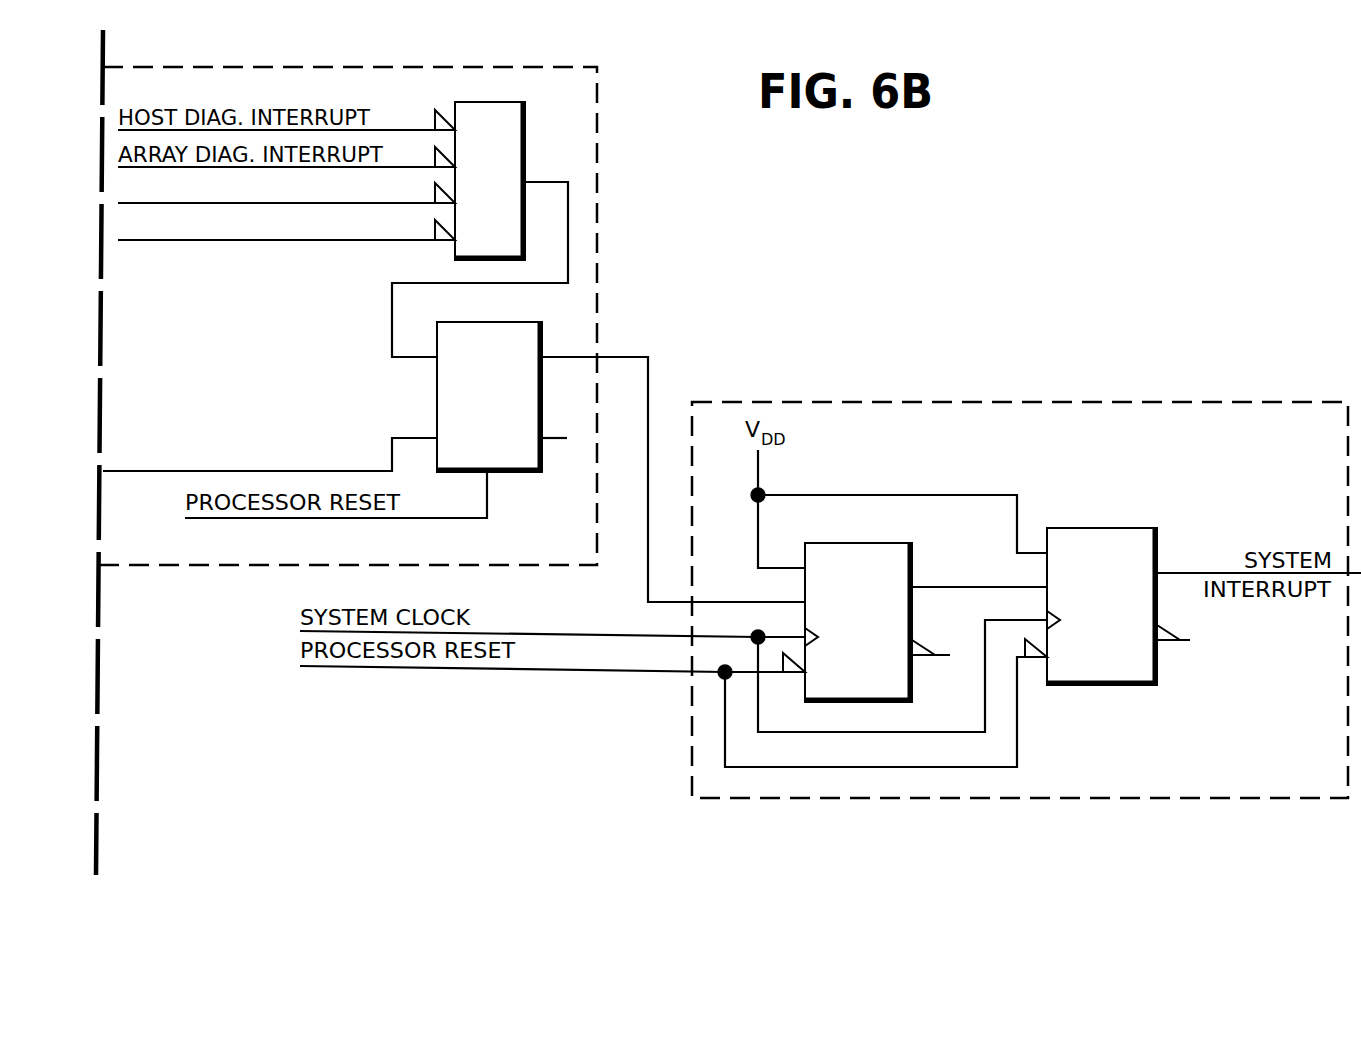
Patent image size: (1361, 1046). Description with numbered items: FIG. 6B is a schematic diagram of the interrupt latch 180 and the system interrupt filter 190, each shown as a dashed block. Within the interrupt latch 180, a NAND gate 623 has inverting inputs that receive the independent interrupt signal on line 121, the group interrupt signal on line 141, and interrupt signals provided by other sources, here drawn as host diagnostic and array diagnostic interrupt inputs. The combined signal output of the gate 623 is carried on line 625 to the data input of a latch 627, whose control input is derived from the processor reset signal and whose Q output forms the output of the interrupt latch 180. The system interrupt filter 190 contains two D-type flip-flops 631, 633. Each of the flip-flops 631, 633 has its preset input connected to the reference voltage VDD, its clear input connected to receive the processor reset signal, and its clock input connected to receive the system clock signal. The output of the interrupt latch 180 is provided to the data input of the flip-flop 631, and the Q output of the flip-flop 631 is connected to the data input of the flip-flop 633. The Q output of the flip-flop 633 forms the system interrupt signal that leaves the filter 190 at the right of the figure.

The interrupt latch 180 is at (597, 120).
The system interrupt filter 190 is at (905, 402).
The NAND gate 623 is at (525, 103).
The OR gate output line 625 is at (392, 320).
The latch 627 is at (540, 322).
The D-type flip-flop 631 is at (910, 543).
The D-type flip-flop 633 is at (1095, 528).
The line carrying group interrupt signal 141 is at (283, 242).
The line carrying independent interrupt signal 121 is at (390, 205).